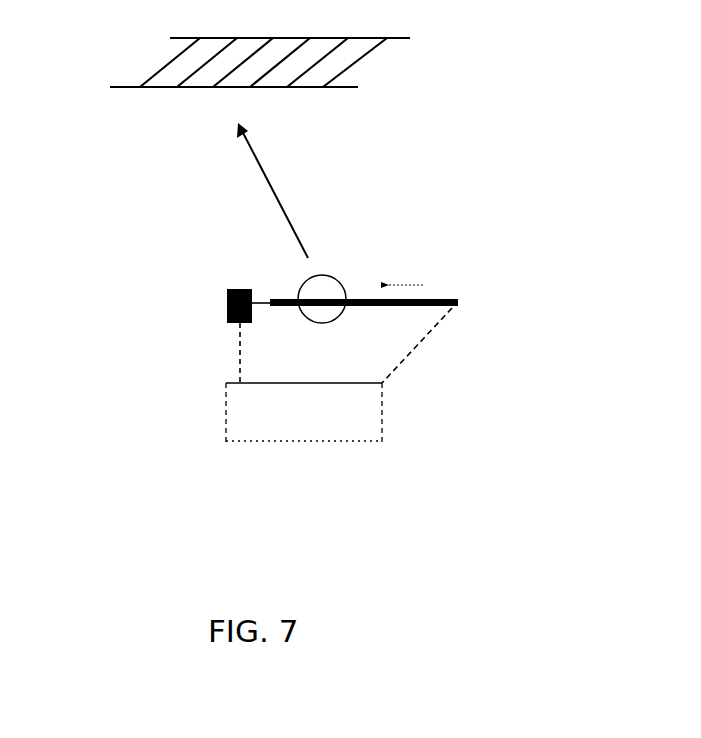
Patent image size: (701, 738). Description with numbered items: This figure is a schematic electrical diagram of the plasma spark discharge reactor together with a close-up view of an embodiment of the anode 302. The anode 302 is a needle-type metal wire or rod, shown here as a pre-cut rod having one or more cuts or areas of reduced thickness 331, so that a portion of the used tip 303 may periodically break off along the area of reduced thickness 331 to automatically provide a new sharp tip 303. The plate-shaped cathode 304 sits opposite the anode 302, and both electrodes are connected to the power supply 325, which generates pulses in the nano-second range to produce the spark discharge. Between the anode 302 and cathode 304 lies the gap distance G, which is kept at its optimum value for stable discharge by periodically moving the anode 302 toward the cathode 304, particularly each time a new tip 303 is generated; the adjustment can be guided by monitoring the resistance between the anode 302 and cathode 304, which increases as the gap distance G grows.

The tip 303 is at (147, 76).
The area of reduced thickness 331 is at (357, 62).
The gap distance G is at (262, 301).
The anode 302 is at (390, 267).
The cathode 304 is at (141, 314).
The power supply 325 is at (339, 375).